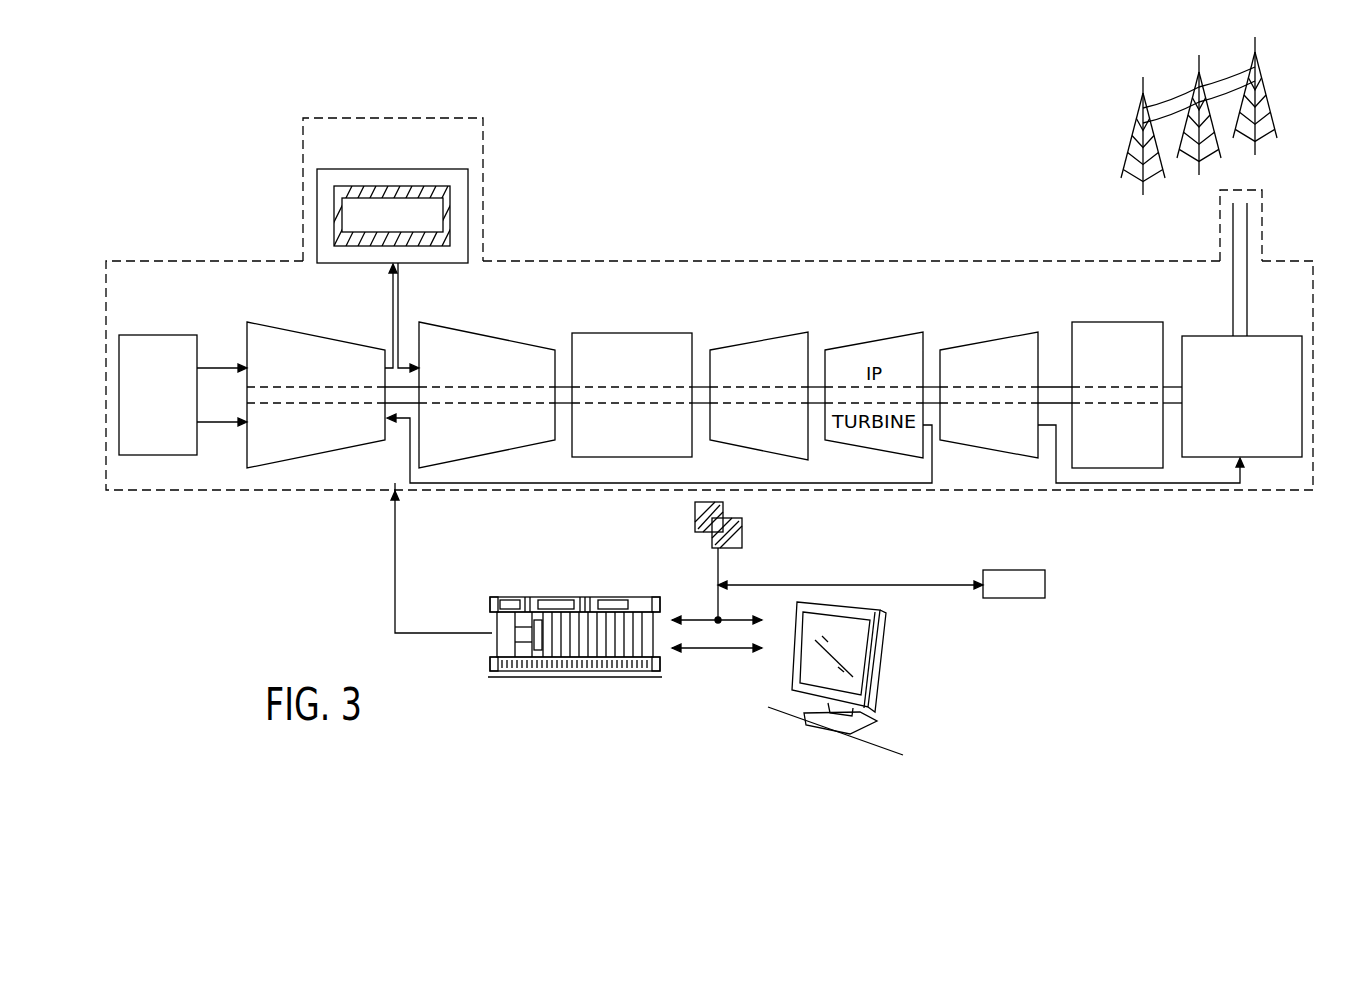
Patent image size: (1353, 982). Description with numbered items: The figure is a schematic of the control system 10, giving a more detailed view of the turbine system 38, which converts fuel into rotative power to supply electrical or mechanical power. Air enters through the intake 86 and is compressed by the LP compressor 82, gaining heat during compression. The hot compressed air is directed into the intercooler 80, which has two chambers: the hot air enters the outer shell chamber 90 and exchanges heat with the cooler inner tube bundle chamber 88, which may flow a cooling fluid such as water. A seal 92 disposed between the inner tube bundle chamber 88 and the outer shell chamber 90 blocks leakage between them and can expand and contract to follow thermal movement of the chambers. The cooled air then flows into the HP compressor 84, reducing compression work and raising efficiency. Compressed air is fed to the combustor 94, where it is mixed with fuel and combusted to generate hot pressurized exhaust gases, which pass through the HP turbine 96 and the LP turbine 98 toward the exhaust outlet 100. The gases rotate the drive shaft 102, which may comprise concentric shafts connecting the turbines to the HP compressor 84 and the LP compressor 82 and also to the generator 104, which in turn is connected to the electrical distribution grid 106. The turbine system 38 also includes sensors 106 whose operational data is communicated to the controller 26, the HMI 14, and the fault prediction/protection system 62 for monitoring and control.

The control system 10 is at (1085, 715).
The HMI 14 is at (838, 730).
The controller 26 is at (589, 677).
The turbine system 38 is at (708, 232).
The fault prediction/protection system 62 is at (1045, 585).
The intercooler 80 is at (459, 168).
The low pressure (LP) compressor 82 is at (320, 337).
The high pressure (HP) compressor 84 is at (490, 337).
The intake 86 is at (157, 335).
The inner tube bundle chamber 88 is at (381, 226).
The outer shell chamber 90 is at (363, 180).
The seal 92 is at (447, 218).
The combustor 94 is at (630, 333).
The high pressure (HP) turbine 96 is at (758, 335).
The low pressure (LP) turbine 98 is at (990, 338).
The exhaust outlet 100 is at (1121, 322).
The drive shaft 102 is at (698, 382).
The generator 104 is at (1280, 336).
The electrical distribution grid / sensors 106 is at (1093, 145).